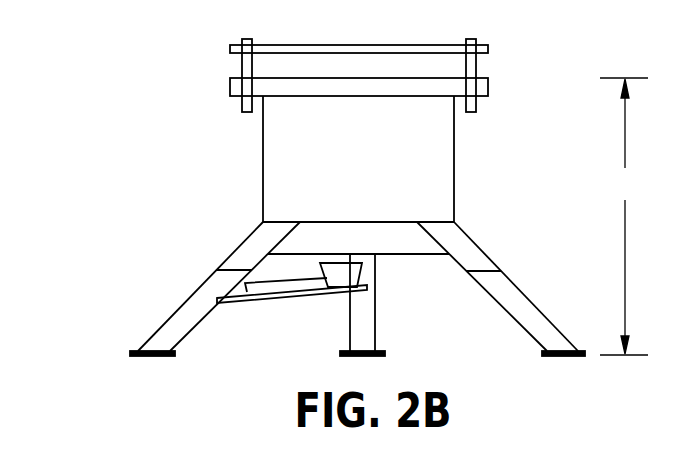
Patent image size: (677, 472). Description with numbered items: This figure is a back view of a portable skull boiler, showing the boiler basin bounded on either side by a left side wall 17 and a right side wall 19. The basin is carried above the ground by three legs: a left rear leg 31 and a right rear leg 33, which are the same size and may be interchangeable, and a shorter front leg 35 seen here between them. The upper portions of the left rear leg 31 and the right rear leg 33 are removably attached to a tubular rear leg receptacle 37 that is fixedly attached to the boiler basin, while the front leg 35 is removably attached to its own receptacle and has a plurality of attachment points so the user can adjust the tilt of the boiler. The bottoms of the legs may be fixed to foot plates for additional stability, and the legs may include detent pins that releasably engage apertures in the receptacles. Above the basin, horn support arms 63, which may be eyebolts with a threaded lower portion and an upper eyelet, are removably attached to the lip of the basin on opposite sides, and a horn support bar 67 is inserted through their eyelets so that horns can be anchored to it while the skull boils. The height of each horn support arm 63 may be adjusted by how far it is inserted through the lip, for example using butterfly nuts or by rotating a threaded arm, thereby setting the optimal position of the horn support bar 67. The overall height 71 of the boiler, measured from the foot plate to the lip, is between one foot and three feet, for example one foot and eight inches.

The left side wall 17 is at (263, 188).
The right side wall 19 is at (455, 187).
The left rear leg 31 is at (185, 318).
The right rear leg 33 is at (532, 318).
The front leg 35 is at (377, 325).
The tubular rear leg receptacle 37 is at (245, 262).
The horn support arm 63 is at (242, 72).
The horn support bar 67 is at (342, 45).
The height 71 is at (624, 216).